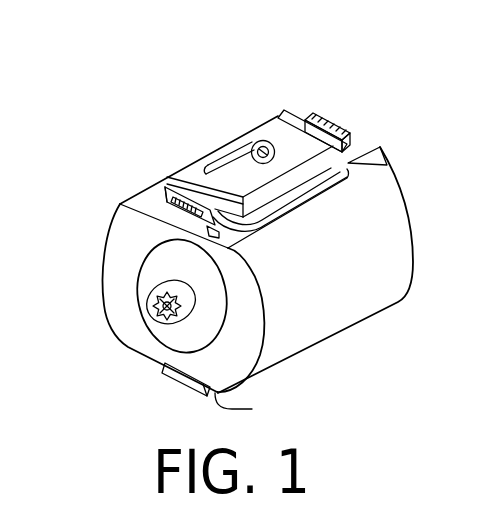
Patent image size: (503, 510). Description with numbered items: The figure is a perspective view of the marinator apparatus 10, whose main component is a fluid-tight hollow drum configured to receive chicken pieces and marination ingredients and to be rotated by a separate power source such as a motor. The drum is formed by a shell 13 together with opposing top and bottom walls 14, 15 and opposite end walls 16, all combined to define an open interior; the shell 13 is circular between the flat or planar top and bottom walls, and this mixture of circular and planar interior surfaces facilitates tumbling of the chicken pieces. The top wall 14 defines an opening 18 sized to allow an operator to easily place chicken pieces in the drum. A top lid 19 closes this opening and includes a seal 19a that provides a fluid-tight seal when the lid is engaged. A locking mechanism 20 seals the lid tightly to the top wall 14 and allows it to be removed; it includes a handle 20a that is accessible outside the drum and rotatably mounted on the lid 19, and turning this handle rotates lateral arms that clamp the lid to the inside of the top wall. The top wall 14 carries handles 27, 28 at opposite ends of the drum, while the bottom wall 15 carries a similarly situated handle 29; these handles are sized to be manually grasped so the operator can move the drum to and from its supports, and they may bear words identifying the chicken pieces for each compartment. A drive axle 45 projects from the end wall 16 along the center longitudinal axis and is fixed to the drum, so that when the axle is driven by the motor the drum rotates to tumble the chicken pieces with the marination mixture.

The marinator apparatus 10 is at (133, 196).
The shell 13 is at (335, 267).
The top wall 14 is at (366, 163).
The bottom wall 15 is at (252, 409).
The end wall 16 is at (117, 253).
The opening 18 is at (172, 178).
The top lid 19 is at (277, 127).
The seal 19a is at (349, 173).
The locking mechanism 20 is at (240, 148).
The handle 20a is at (213, 163).
The handle 27 is at (165, 203).
The handle 28 is at (330, 123).
The handle 29 is at (190, 384).
The drive axle 45 is at (160, 278).